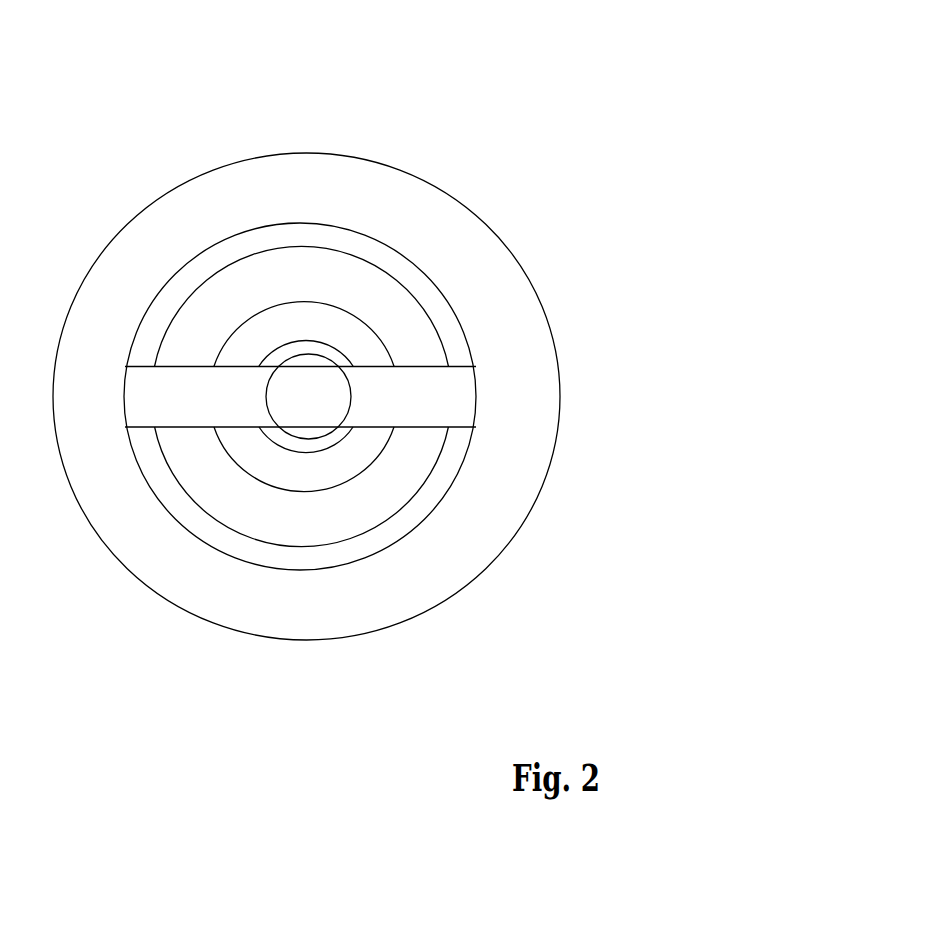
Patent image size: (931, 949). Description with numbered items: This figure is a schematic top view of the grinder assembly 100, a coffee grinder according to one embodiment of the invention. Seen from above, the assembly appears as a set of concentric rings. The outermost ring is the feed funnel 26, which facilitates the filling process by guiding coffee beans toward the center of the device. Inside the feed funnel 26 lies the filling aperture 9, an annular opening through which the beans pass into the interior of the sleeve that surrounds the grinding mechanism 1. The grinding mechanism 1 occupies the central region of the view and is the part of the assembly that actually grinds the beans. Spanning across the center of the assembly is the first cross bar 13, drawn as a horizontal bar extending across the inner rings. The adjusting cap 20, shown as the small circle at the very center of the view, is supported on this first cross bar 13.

The grinder assembly 100 is at (672, 82).
The feed funnel 26 is at (385, 193).
The grinding mechanism 1 is at (337, 509).
The filling aperture 9 is at (208, 231).
The first cross bar 13 is at (422, 397).
The adjusting cap 20 is at (295, 390).